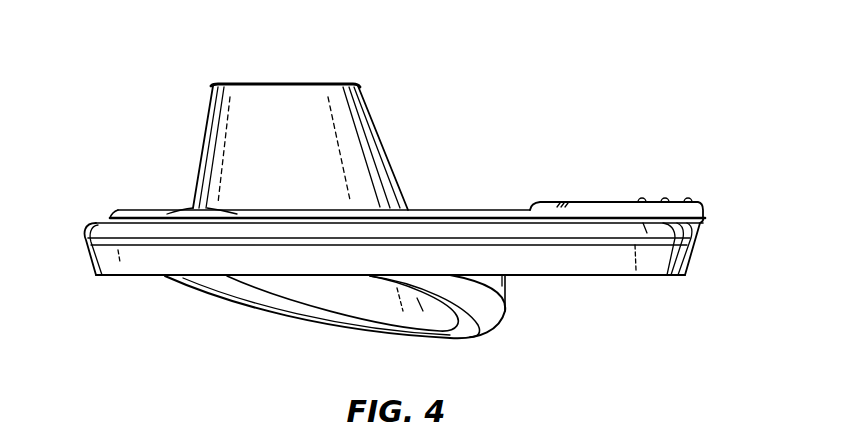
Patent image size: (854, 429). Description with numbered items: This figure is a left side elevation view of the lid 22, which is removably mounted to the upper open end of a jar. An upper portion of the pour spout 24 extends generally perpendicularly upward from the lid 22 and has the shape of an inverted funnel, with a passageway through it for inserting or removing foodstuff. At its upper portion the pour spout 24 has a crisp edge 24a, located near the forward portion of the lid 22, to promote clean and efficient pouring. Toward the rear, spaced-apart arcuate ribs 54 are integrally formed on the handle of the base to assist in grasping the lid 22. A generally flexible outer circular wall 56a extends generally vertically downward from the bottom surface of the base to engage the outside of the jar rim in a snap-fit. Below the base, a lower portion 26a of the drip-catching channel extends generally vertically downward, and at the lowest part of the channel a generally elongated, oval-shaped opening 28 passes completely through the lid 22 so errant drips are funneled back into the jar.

The lid 22 is at (505, 87).
The pour spout 24 is at (235, 150).
The crisp edge 24a is at (227, 84).
The lower portion of the drip-catching channel 26a is at (497, 317).
The opening 28 is at (438, 340).
The rib 54 is at (613, 201).
The outer circular wall 56a is at (673, 253).